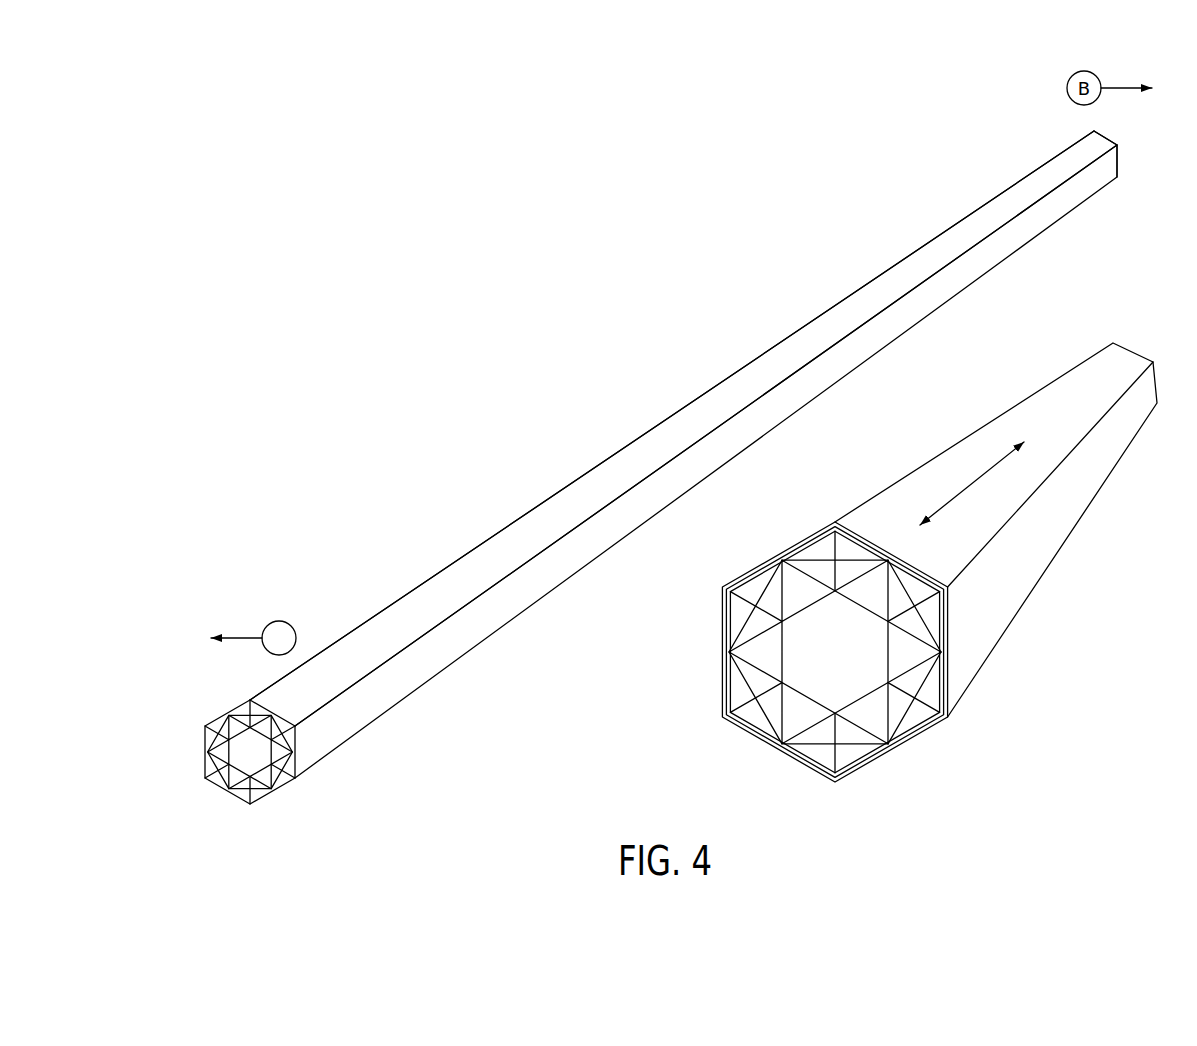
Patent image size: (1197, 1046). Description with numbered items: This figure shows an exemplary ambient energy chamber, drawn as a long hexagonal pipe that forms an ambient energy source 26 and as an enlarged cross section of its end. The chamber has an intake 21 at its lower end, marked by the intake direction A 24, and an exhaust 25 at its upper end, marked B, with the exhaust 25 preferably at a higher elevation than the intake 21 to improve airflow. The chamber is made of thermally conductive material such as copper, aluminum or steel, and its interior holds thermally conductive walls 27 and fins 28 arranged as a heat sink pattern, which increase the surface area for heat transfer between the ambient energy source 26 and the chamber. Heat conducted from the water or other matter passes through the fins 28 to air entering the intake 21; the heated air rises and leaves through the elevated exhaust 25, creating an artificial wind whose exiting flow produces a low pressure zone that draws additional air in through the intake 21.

The intake 21 is at (283, 803).
The intake direction A 24 is at (248, 621).
The exhaust 25 is at (1112, 191).
The ambient energy source 26 is at (460, 367).
The thermally conductive walls 27 is at (880, 649).
The fins 28 is at (914, 645).